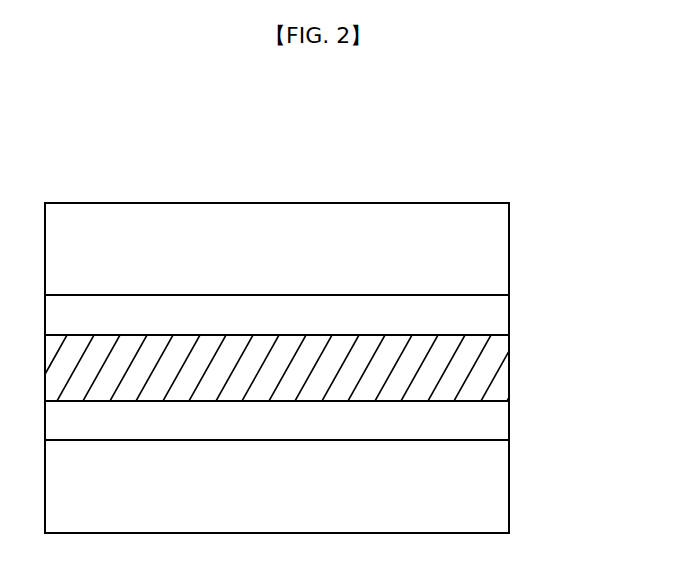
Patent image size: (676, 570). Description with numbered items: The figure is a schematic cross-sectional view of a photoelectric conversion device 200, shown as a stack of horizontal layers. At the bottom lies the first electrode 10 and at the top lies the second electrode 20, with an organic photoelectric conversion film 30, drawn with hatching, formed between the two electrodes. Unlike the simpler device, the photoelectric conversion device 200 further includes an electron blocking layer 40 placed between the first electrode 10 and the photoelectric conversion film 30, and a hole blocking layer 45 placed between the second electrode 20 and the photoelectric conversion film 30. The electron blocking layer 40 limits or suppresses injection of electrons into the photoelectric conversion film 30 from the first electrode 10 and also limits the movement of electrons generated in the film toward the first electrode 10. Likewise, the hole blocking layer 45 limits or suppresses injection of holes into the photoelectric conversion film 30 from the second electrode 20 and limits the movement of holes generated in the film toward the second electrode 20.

The photoelectric conversion device 200 is at (380, 124).
The second electrode 20 is at (482, 261).
The hole blocking layer 45 is at (482, 316).
The photoelectric conversion film 30 is at (482, 369).
The electron blocking layer 40 is at (482, 421).
The first electrode 10 is at (482, 476).